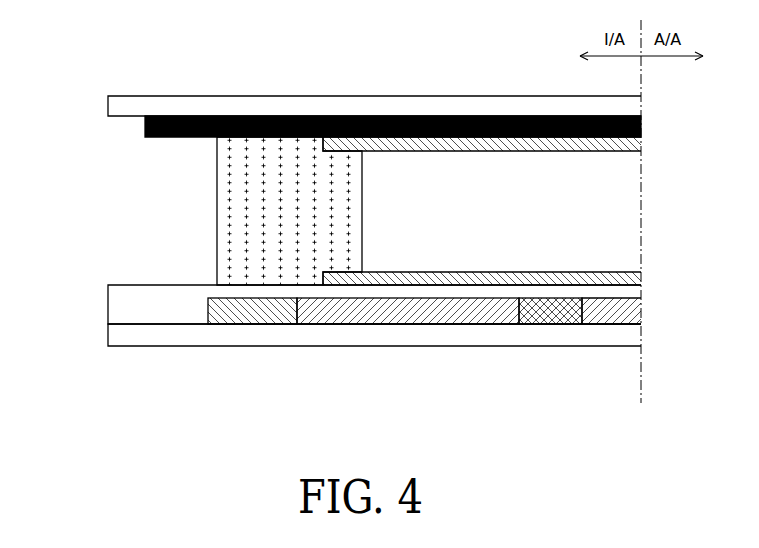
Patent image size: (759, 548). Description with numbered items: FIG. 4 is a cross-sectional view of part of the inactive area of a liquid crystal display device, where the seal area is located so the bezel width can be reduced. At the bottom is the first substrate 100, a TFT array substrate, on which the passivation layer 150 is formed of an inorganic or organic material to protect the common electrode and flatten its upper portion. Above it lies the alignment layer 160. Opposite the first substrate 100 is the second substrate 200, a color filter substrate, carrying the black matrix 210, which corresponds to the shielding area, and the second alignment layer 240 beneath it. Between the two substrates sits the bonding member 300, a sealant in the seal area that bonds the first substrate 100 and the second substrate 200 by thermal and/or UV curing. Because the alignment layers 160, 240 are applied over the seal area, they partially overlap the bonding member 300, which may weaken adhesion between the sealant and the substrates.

The first substrate 100 is at (127, 334).
The passivation layer 150 is at (138, 303).
The alignment layer 160 is at (323, 278).
The second substrate 200 is at (120, 104).
The black matrix 210 is at (145, 124).
The second alignment layer 240 is at (323, 141).
The bonding member 300 is at (230, 216).